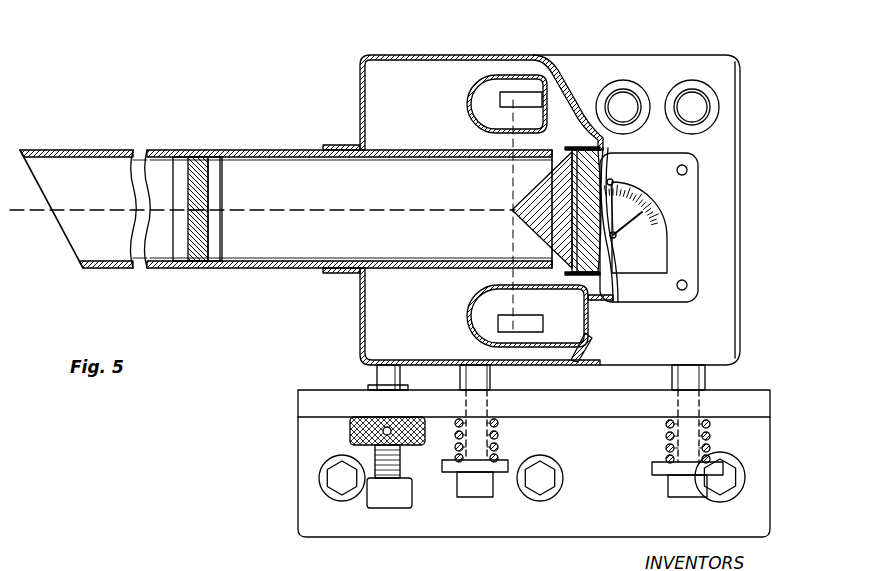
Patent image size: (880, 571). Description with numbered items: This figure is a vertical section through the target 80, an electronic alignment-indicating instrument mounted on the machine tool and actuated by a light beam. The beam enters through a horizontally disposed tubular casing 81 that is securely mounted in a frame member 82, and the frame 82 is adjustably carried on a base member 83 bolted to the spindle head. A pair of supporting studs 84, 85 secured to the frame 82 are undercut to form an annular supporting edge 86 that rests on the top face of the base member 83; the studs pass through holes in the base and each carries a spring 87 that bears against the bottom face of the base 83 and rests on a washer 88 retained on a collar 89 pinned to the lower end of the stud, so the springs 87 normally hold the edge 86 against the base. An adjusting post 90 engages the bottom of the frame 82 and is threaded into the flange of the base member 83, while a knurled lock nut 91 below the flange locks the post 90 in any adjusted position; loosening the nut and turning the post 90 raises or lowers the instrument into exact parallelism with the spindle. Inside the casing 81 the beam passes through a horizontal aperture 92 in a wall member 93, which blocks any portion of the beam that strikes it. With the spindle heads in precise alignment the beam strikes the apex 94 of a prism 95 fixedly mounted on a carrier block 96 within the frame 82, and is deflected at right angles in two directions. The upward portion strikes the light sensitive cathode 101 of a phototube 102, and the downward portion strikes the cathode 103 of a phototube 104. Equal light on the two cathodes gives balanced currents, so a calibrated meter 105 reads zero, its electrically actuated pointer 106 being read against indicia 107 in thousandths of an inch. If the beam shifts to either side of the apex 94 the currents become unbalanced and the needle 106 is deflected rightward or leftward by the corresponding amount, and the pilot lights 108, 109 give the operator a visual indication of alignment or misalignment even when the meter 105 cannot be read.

The target 80 is at (206, 130).
The tubular casing 81 is at (112, 272).
The frame member 82 is at (360, 322).
The base member 83 is at (310, 400).
The supporting stud 84 is at (492, 376).
The supporting stud 85 is at (706, 380).
The annular supporting edge 86 is at (492, 402).
The spring 87 is at (498, 430).
The washer 88 is at (505, 474).
The collar 89 is at (472, 492).
The adjusting post 90 is at (378, 378).
The knurled lock nut 91 is at (352, 428).
The aperture 92 is at (205, 203).
The wall member 93 is at (208, 238).
The apex 94 is at (512, 213).
The prism 95 is at (556, 239).
The carrier block 96 is at (603, 160).
The light sensitive cathode 101 is at (500, 98).
The phototube 102 is at (470, 84).
The light sensitive cathode 103 is at (500, 320).
The phototube 104 is at (468, 302).
The calibrated meter 105 is at (685, 235).
The pointer 106 is at (616, 240).
The indicia 107 is at (640, 210).
The pilot light 108 is at (692, 92).
The pilot light 109 is at (623, 92).